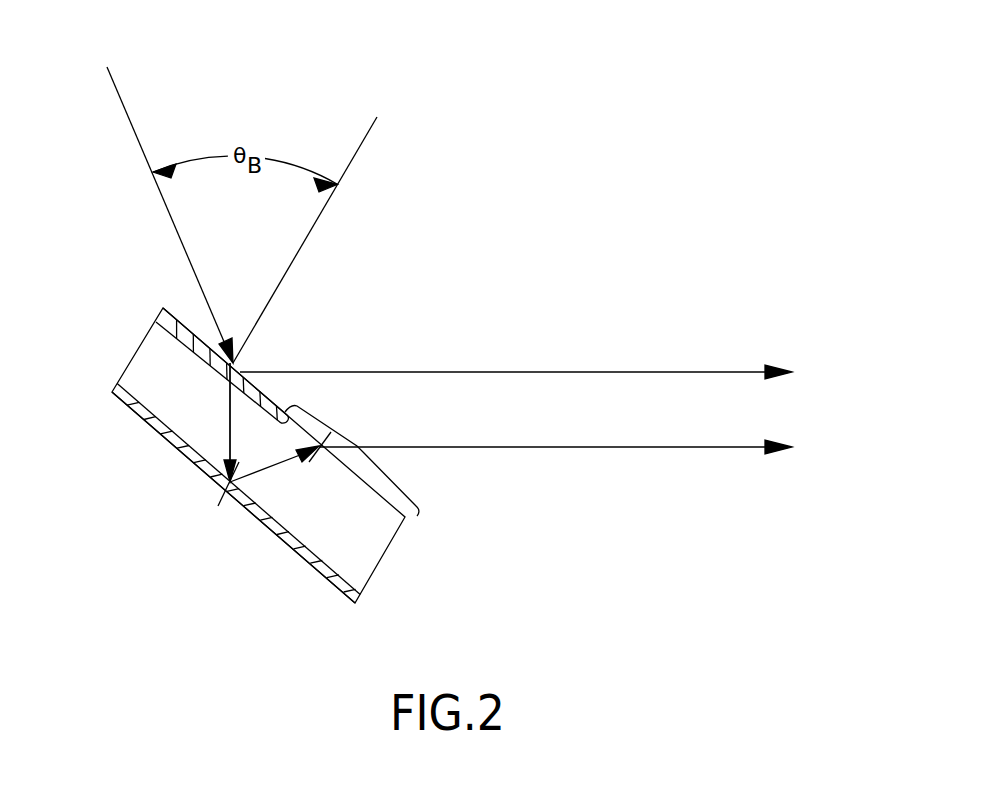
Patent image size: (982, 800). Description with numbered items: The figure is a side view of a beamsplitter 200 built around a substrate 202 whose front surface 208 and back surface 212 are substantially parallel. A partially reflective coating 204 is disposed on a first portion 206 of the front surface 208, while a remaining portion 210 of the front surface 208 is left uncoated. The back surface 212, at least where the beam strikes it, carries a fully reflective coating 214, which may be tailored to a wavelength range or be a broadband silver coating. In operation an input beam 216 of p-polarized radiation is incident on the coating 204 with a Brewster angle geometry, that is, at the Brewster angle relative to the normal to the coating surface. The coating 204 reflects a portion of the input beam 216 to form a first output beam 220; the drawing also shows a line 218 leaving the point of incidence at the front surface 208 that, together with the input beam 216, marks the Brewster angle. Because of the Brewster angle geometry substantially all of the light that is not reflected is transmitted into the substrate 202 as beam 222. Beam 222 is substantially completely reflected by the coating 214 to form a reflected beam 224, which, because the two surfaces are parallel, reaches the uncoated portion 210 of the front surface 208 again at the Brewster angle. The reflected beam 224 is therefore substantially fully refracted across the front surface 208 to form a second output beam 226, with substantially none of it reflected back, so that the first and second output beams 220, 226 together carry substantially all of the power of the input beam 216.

The beamsplitter 200 is at (472, 238).
The substrate 202 is at (378, 548).
The partially reflective coating 204 is at (170, 308).
The first portion 206 is at (229, 381).
The front surface 208 is at (156, 324).
The remaining portion 210 is at (358, 447).
The back surface 212 is at (129, 410).
The fully reflective coating 214 is at (273, 533).
The input beam 216 is at (170, 214).
The reflected beam 218 is at (277, 291).
The first output beam 220 is at (297, 370).
The beam 222 is at (203, 458).
The reflected beam 224 is at (280, 465).
The second output beam 226 is at (596, 449).